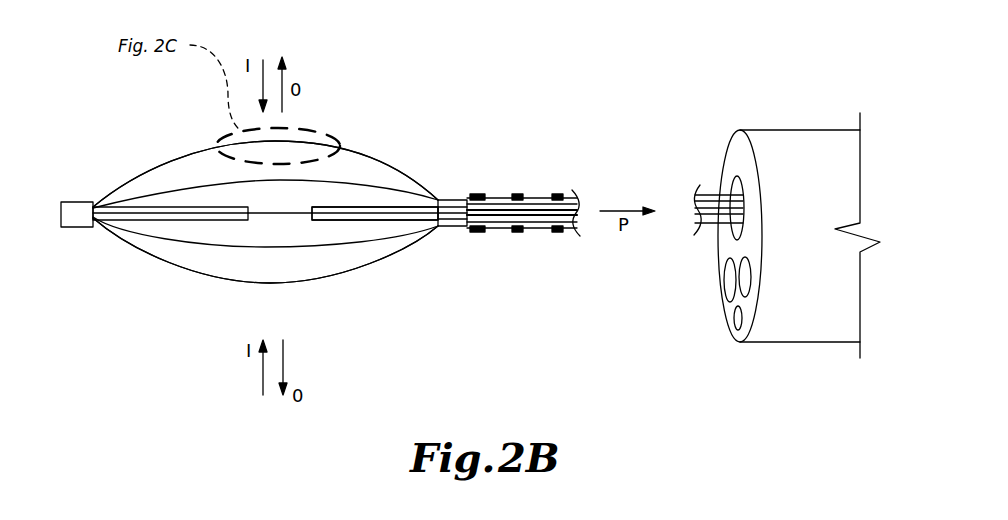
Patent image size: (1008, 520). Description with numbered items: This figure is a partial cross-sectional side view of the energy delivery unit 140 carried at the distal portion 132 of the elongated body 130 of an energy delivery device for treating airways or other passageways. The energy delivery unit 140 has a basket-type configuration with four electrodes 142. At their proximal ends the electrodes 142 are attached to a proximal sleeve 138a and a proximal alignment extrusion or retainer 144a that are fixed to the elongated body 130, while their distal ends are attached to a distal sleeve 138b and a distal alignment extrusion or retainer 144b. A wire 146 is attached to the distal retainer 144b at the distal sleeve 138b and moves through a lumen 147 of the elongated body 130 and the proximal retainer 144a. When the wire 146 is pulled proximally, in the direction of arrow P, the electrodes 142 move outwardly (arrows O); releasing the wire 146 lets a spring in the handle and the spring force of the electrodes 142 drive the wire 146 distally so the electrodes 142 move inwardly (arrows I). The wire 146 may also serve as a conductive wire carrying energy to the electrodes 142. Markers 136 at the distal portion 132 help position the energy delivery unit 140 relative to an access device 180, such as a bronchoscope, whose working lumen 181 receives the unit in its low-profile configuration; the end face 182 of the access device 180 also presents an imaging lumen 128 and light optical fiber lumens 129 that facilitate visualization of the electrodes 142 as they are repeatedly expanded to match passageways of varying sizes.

The imaging lumen 128 is at (733, 340).
The light optical fiber lumens 129 is at (737, 290).
The elongated body 130 is at (708, 176).
The distal portion 132 is at (537, 230).
The markers 136 is at (512, 190).
The proximal sleeve 138a is at (457, 228).
The distal sleeve 138b is at (70, 229).
The energy delivery unit 140 is at (272, 298).
The electrodes 142 is at (176, 207).
The proximal alignment extrusion or retainer 144a is at (360, 220).
The distal alignment extrusion or retainer 144b is at (166, 178).
The wire 146 is at (297, 210).
The lumen 147 is at (580, 205).
The access device 180 is at (783, 135).
The working lumen 181 is at (731, 188).
The end face 182 is at (722, 315).